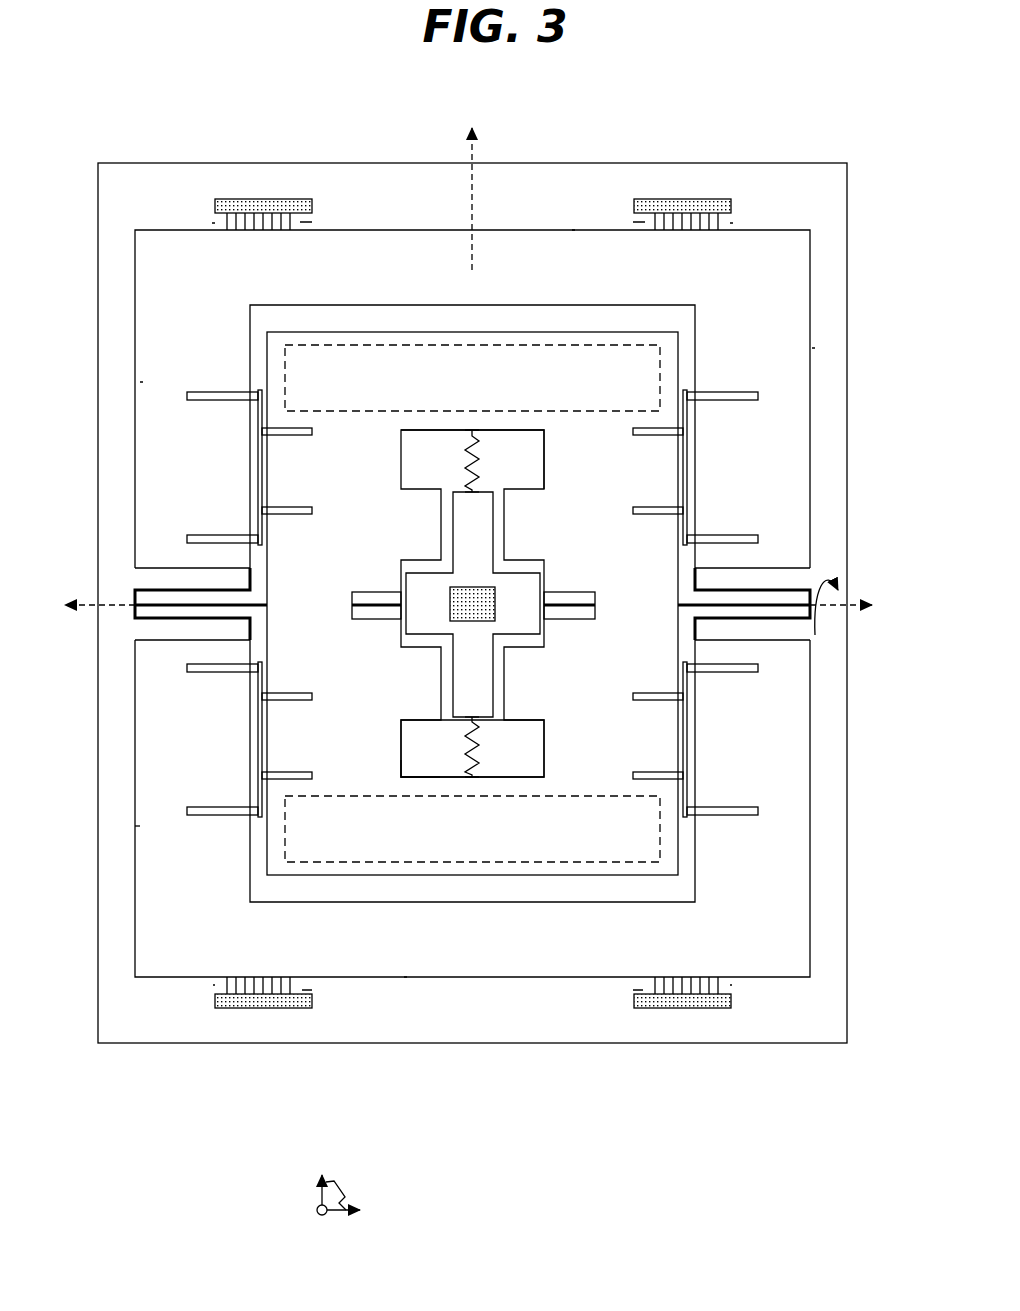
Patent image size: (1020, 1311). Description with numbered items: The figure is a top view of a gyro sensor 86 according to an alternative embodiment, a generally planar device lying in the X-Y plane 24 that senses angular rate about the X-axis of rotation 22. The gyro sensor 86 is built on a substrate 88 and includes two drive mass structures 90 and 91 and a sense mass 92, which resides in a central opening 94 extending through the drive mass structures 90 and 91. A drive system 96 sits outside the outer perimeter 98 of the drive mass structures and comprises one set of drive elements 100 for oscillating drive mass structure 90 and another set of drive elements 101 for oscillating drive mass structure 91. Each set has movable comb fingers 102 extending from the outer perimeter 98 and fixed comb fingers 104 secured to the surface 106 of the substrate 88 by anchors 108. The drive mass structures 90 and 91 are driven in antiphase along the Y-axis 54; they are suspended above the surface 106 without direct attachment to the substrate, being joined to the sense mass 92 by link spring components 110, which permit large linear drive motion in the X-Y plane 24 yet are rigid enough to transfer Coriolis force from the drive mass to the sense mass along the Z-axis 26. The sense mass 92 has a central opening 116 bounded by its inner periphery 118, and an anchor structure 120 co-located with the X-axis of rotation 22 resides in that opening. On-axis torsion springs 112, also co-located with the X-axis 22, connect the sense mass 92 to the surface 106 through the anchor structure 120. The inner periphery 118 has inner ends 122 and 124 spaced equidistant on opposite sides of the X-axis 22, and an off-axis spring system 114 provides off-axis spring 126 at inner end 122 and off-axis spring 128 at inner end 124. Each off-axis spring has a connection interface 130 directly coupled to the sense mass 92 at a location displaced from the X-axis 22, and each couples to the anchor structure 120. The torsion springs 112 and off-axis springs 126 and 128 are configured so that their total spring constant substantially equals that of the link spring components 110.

The X-axis of rotation 22 is at (862, 605).
The X-Y plane 24 is at (361, 1198).
The Z-axis 26 is at (318, 1210).
The Y-axis 54 is at (472, 150).
The gyro sensor 86 is at (755, 1175).
The substrate 88 is at (107, 182).
The drive mass structure 90 is at (140, 283).
The drive mass structure 91 is at (140, 826).
The sense mass 92 is at (270, 633).
The central opening 94 is at (412, 320).
The drive system 96 is at (475, 603).
The outer perimeter 98 is at (572, 230).
The drive elements 100 is at (212, 223).
The drive elements 101 is at (213, 985).
The movable comb fingers 102 is at (290, 225).
The fixed comb fingers 104 is at (300, 222).
The surface 106 is at (482, 1013).
The anchors 108 is at (287, 203).
The link spring components 110 is at (258, 455).
The on-axis torsion springs 112 is at (368, 603).
The off-axis spring system 114 is at (533, 570).
The central opening 116 is at (432, 565).
The inner periphery 118 is at (430, 433).
The anchor structure 120 is at (475, 600).
The inner end 122 is at (487, 448).
The inner end 124 is at (425, 763).
The off-axis spring 126 is at (467, 460).
The off-axis spring 128 is at (467, 737).
The connection interface 130 is at (465, 433).